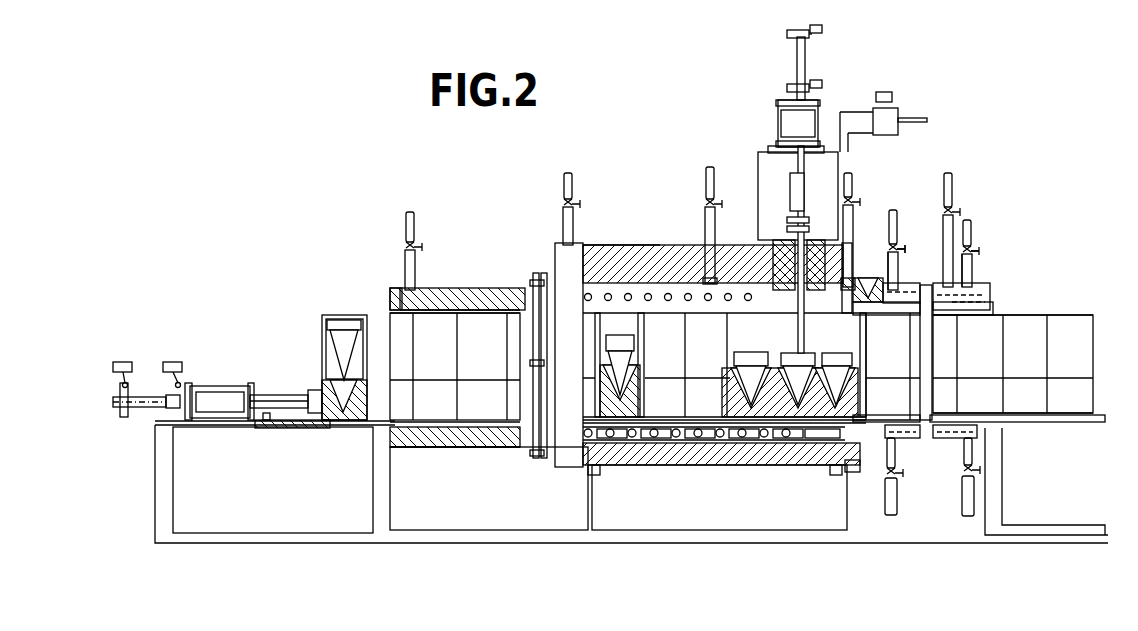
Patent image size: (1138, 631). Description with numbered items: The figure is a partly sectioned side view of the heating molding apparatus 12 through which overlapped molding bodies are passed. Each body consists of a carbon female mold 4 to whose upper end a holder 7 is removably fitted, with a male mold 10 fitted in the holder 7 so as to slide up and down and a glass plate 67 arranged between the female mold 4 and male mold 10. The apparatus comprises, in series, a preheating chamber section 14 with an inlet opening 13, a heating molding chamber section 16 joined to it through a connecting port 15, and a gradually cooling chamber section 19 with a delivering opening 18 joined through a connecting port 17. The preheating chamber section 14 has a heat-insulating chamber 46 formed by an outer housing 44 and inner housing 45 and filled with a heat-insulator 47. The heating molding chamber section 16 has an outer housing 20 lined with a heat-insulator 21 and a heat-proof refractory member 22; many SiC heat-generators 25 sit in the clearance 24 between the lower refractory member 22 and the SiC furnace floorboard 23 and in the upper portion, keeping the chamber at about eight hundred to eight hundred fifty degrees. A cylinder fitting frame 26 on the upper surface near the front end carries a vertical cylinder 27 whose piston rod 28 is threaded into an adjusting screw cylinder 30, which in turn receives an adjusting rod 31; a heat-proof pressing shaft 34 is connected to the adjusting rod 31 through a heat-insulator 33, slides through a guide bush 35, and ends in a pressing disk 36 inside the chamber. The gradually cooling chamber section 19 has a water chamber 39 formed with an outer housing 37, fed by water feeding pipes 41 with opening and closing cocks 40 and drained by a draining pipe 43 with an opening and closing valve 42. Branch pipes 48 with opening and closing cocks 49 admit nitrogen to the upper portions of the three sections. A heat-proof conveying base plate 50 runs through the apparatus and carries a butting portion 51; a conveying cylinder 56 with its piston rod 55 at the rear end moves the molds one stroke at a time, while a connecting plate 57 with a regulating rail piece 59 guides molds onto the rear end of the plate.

The female mold 4 is at (360, 400).
The holder 7 is at (322, 345).
The male mold 10 is at (333, 322).
The heating molding apparatus 12 is at (650, 270).
The inlet opening 13 is at (380, 318).
The preheating chamber section 14 is at (490, 310).
The connecting port 15 is at (540, 285).
The heating molding chamber section 16 is at (681, 230).
The connecting port 17 is at (862, 285).
The delivering opening 18 is at (990, 306).
The gradually cooling chamber section 19 is at (1057, 304).
The outer housing 20 is at (622, 270).
The heat-insulator 21 is at (662, 275).
The heat-proof refractory member 22 is at (600, 270).
The SiC furnace floorboard 23 is at (640, 433).
The clearance 24 is at (680, 430).
The SiC heat-generators 25 is at (632, 290).
The cylinder fitting frame 26 is at (758, 165).
The cylinder 27 is at (795, 102).
The piston rod 28 is at (778, 130).
The adjusting screw cylinder 30 is at (808, 147).
The adjusting rod 31 is at (830, 150).
The heat-insulator 33 is at (822, 200).
The pressing shaft 34 is at (815, 232).
The guide bush 35 is at (808, 224).
The pressing disk 36 is at (850, 472).
The outer housing 37 is at (905, 290).
The water chamber 39 is at (985, 293).
The opening and closing cocks 40 is at (900, 254).
The water feeding pipes 41 is at (898, 228).
The opening and closing valve 42 is at (898, 500).
The draining pipe 43 is at (888, 445).
The outer housing 44 is at (455, 290).
The inner housing 45 is at (505, 312).
The heat-insulating chamber 46 is at (470, 310).
The heat-insulator 47 is at (438, 290).
The branch pipes 48 is at (405, 278).
The opening and closing cocks 49 is at (415, 248).
The conveying base plate 50 is at (1062, 421).
The butting portion 51 is at (300, 398).
The piston rod 55 is at (268, 395).
The conveying cylinder 56 is at (222, 386).
The connecting plate 57 is at (283, 430).
The regulating rail piece 59 is at (262, 430).
The glass plate 67 is at (320, 430).